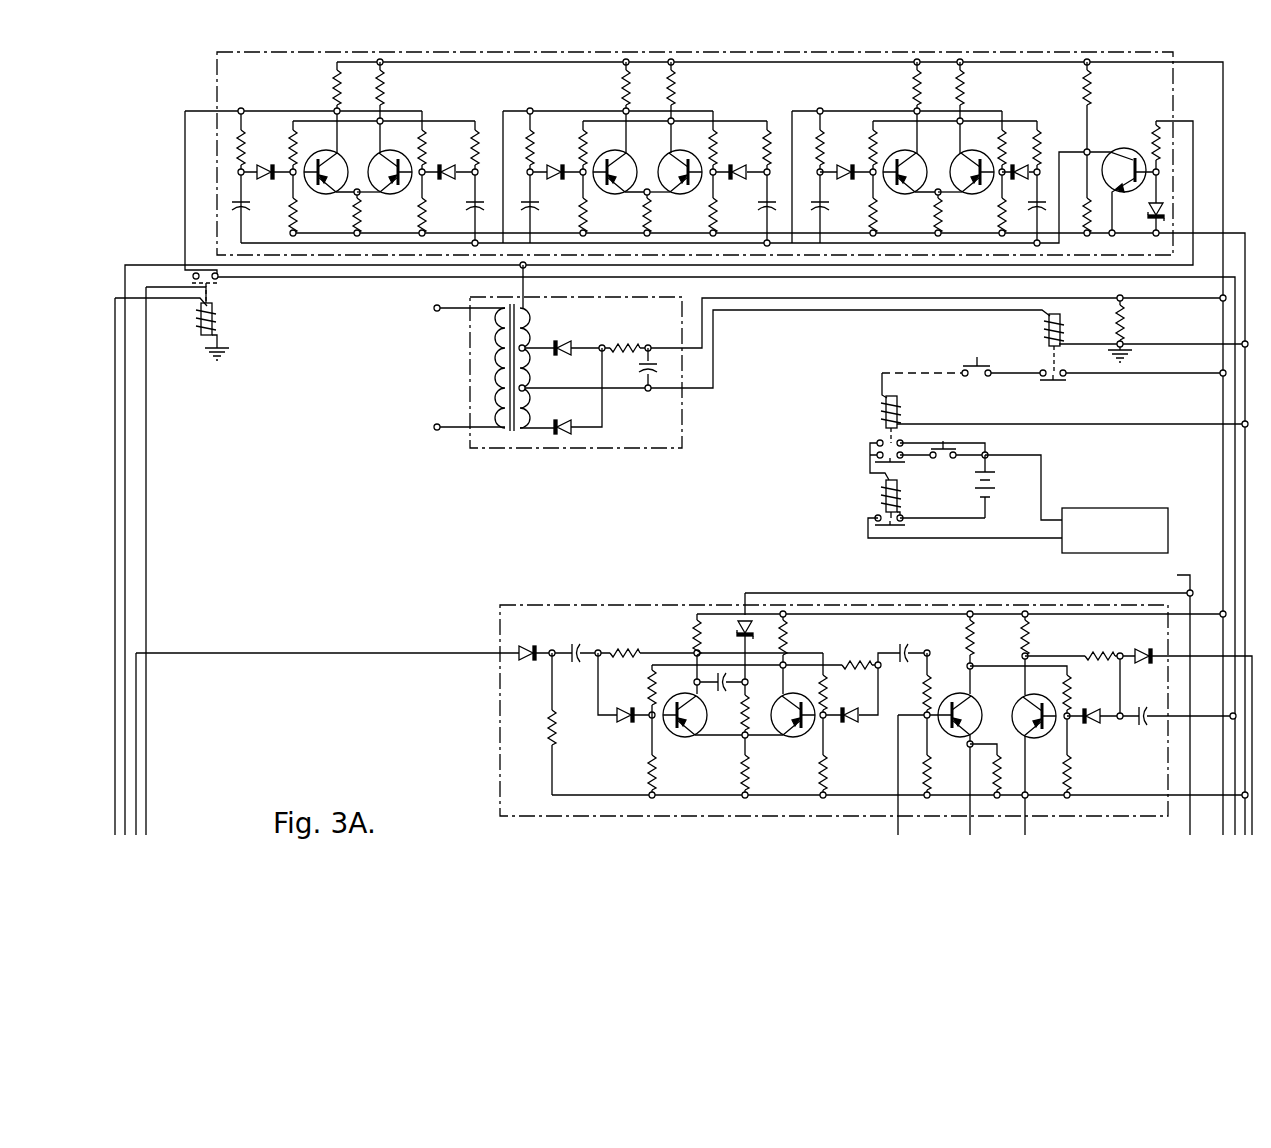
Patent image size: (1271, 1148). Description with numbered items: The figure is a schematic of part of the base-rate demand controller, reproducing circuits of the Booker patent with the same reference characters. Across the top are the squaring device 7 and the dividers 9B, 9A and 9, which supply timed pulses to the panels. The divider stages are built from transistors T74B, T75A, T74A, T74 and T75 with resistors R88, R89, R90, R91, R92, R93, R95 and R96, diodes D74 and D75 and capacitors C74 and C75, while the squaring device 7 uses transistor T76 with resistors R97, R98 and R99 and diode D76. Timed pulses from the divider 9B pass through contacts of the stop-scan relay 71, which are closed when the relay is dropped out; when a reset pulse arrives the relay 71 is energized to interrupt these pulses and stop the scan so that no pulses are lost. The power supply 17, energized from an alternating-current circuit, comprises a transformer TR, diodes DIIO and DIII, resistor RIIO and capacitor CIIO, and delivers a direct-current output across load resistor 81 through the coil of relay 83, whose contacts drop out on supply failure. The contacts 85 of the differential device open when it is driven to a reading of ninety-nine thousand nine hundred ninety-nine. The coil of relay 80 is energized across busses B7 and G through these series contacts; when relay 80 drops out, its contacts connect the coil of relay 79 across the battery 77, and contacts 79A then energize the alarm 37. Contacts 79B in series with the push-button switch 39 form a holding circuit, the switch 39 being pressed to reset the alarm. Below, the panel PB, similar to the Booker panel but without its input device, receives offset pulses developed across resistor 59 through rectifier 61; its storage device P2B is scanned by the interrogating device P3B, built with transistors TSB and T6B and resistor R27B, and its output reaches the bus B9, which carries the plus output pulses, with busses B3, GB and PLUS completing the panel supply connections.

The divider 9B is at (288, 94).
The divider 9A is at (598, 95).
The divider 9 is at (855, 95).
The squaring device 7 is at (1157, 95).
The transistor T74B is at (320, 197).
The transistor T75A is at (384, 197).
The transistor T74A is at (609, 197).
The resistor R88 is at (817, 128).
The resistor R89 is at (873, 135).
The resistor R90 is at (880, 203).
The resistor R91 is at (914, 85).
The resistor R92 is at (935, 226).
The resistor R93 is at (963, 90).
The resistor R95 is at (1000, 215).
The resistor R96 is at (1042, 130).
The resistor R97 is at (1082, 83).
The resistor R98 is at (1086, 233).
The resistor R99 is at (1156, 125).
The diode D74 is at (858, 184).
The diode D75 is at (1040, 165).
The diode D76 is at (1155, 212).
The capacitor C74 is at (826, 208).
The capacitor C75 is at (1037, 208).
The transistor T74 is at (905, 151).
The transistor T75 is at (985, 143).
The transistor T76 is at (1126, 179).
The stop-scan relay 71 is at (212, 305).
The power supply 17 is at (470, 378).
The transformer TR is at (512, 432).
The diode DIIO is at (567, 335).
The resistor RIIO is at (636, 335).
The diode DIII is at (565, 417).
The capacitor CIIO is at (644, 388).
The load resistor 81 is at (1126, 325).
The relay 83 is at (1054, 382).
The contacts 85 is at (970, 364).
The relay 80 is at (884, 412).
The contacts 79B is at (870, 455).
The reset button 39 is at (951, 458).
The battery 77 is at (995, 498).
The relay 79 is at (884, 506).
The contacts 79A is at (905, 520).
The alarm 37 is at (1162, 500).
The bus B7 is at (1161, 298).
The bus B3 is at (1215, 280).
The bus B9 is at (1135, 698).
The bus G is at (1244, 398).
The bus GB is at (1136, 798).
The plus conductor PLUS is at (1142, 575).
The panel PB is at (628, 604).
The rectifier 61 is at (525, 646).
The resistor 59 is at (549, 740).
The storage device P2B is at (715, 779).
The interrogating device P3B is at (952, 645).
The transistor TSB is at (990, 692).
The transistor T6B is at (1055, 735).
The resistor R27B is at (993, 772).